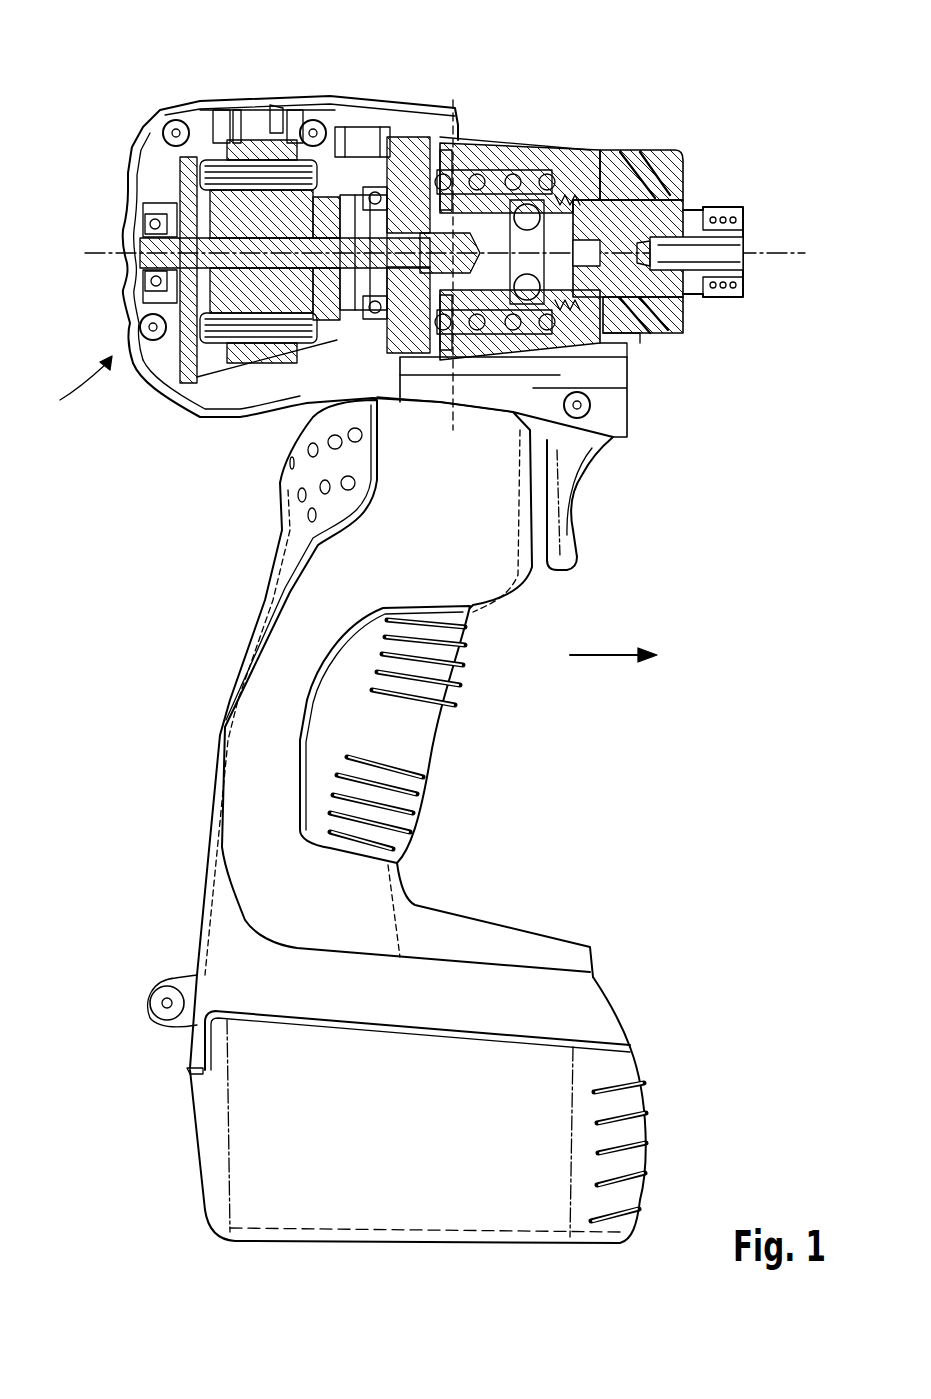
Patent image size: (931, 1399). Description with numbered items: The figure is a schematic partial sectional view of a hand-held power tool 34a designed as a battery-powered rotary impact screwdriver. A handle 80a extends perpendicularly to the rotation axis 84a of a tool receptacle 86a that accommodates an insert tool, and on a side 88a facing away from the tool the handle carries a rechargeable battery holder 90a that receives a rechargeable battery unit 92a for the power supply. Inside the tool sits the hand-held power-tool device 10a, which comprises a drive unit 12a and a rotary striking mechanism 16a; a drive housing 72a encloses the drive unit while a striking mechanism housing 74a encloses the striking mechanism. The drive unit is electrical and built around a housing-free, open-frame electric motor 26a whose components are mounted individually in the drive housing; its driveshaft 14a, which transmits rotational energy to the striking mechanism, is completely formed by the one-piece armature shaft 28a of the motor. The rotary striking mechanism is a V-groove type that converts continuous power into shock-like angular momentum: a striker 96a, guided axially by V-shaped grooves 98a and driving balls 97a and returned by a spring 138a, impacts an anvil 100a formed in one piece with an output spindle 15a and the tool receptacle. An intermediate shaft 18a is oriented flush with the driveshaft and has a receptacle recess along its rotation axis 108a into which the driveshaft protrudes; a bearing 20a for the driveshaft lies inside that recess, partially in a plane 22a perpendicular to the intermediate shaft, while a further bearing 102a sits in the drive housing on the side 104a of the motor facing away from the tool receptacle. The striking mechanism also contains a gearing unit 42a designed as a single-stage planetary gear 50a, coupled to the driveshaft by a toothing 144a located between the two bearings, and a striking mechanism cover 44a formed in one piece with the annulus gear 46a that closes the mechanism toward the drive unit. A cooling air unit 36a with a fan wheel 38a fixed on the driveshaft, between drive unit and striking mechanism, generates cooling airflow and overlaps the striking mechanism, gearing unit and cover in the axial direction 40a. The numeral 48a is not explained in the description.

The hand-held power-tool device 10a is at (486, 66).
The drive unit 12a is at (255, 66).
The driveshaft 14a is at (180, 245).
The armature shaft 28a is at (240, 316).
The rotary striking mechanism 16a is at (642, 68).
The hand-held power tool 34a is at (708, 84).
The cooling air unit 36a is at (324, 98).
The fan wheel 38a is at (355, 135).
The gearing unit 42a is at (418, 104).
The planetary gear 50a is at (410, 245).
The bearing 20a is at (445, 150).
The spring 138a is at (478, 170).
The V-shaped grooves 98a is at (516, 185).
The striker 96a is at (548, 160).
The driving balls 97a is at (569, 198).
The anvil 100a is at (616, 173).
The striking mechanism housing 74a is at (657, 178).
The rotation axis 84a is at (800, 212).
The rotation axis 108a is at (713, 252).
The tool receptacle 86a is at (725, 278).
The output spindle 15a is at (675, 292).
The intermediate shaft 18a is at (632, 338).
The plane 22a is at (467, 405).
The striking mechanism cover 44a is at (410, 380).
The annulus gear 46a is at (455, 407).
The ventilation openings 48a is at (290, 465).
The toothing 144a is at (396, 258).
The electric motor 26a is at (255, 297).
The drive housing 72a is at (160, 390).
The side 104a is at (75, 388).
The further bearing 102a is at (152, 283).
The handle 80a is at (235, 775).
The axial direction 40a is at (605, 660).
The side 88a is at (140, 1149).
The rechargeable battery holder 90a is at (600, 1012).
The rechargeable battery unit 92a is at (640, 1140).